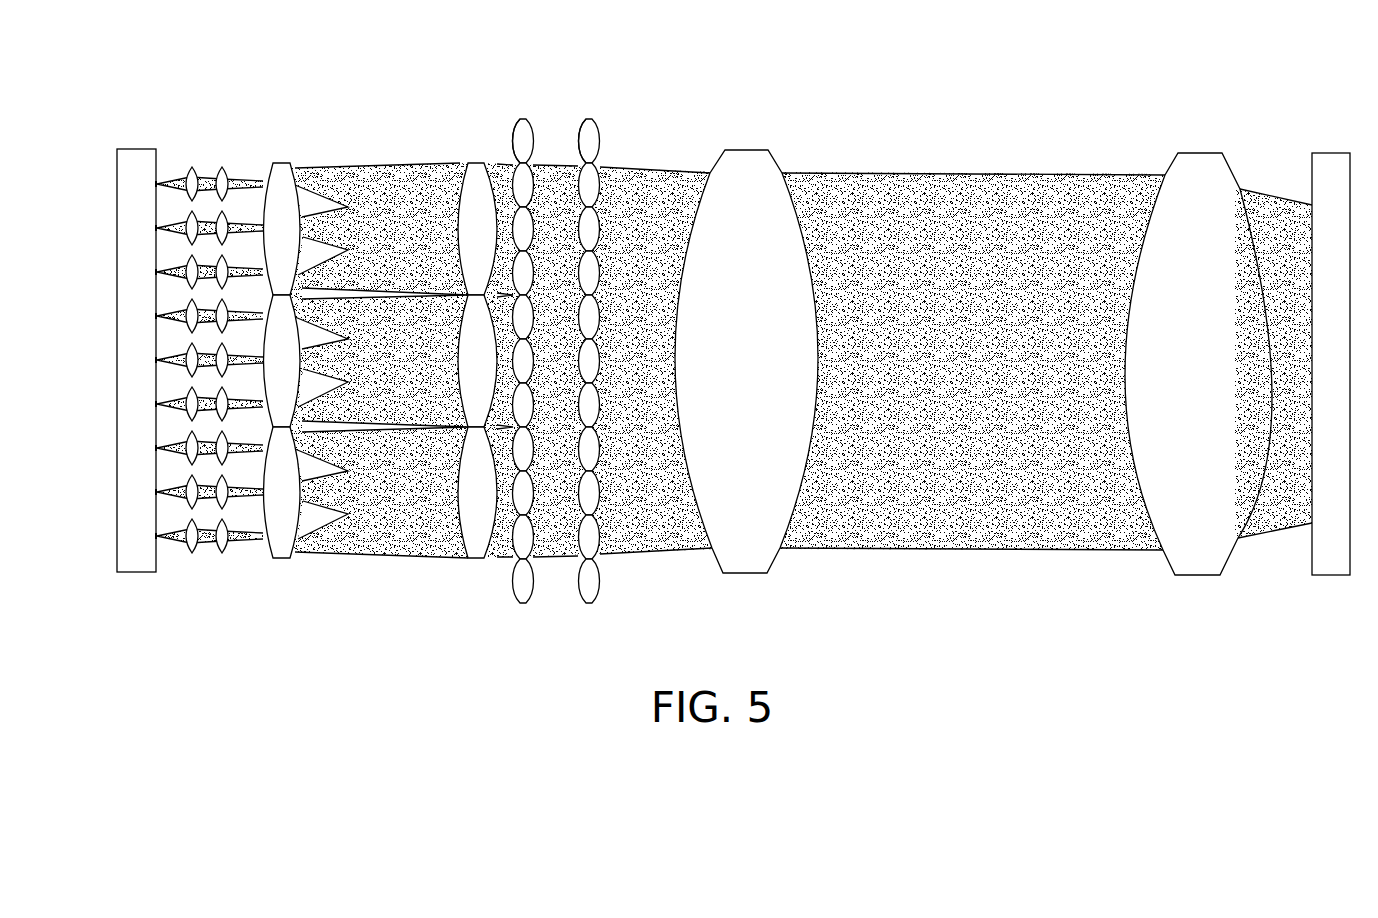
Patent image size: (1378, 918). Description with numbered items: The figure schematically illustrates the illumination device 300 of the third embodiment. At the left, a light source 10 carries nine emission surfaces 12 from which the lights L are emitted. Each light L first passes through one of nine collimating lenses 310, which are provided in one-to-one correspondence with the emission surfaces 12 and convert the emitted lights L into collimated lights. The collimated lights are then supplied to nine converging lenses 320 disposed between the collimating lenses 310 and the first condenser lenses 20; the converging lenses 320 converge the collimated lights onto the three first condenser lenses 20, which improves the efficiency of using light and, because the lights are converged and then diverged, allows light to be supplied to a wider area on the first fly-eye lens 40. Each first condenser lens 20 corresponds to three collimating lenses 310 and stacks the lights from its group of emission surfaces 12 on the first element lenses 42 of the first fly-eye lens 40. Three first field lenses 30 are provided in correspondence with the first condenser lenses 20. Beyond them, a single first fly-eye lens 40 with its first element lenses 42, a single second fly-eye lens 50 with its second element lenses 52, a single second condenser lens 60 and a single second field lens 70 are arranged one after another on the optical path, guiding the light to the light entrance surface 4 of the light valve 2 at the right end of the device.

The light valve 2 is at (1333, 165).
The light entrance surface 4 is at (1312, 238).
The light source 10 is at (137, 168).
The emission surface 12 is at (157, 184).
The first condenser lens 20 is at (288, 168).
The first field lens 30 is at (478, 172).
The first fly-eye lens 40 is at (524, 127).
The first element lens 42 is at (530, 121).
The second fly-eye lens 50 is at (592, 127).
The second element lens 52 is at (597, 121).
The second condenser lens 60 is at (745, 163).
The second field lens 70 is at (1200, 175).
The illumination device 300 is at (1279, 68).
The collimating lens 310 is at (192, 163).
The converging lens 320 is at (223, 163).
The light L is at (174, 160).